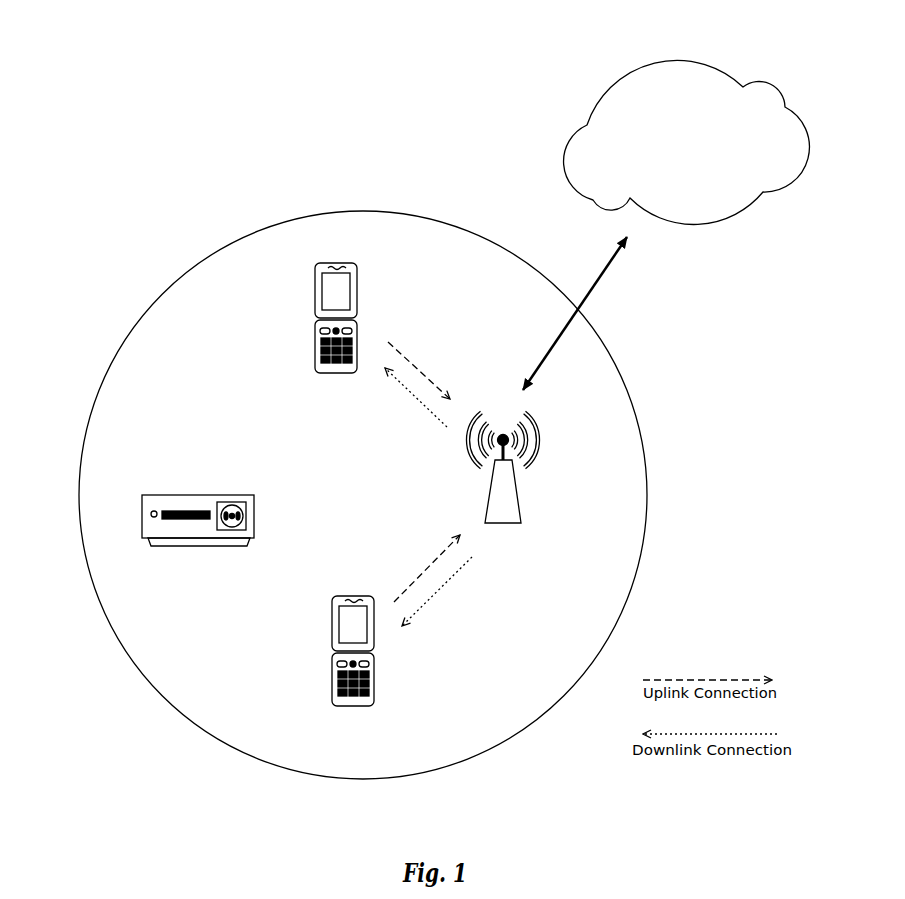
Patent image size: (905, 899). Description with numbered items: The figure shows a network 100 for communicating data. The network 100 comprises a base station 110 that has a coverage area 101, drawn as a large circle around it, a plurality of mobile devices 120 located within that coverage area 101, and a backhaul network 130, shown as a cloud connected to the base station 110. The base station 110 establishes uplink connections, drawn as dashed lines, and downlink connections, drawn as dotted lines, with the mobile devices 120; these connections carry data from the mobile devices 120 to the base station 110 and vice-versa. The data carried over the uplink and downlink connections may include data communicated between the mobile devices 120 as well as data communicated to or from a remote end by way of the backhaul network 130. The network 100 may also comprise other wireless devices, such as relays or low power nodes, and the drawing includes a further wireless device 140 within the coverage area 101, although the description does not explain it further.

The network 100 is at (157, 38).
The coverage area 101 is at (182, 722).
The base station 110 is at (540, 500).
The mobile devices 120 is at (311, 350).
The backhaul network 130 is at (540, 170).
The wireless device / relay node 140 is at (257, 518).